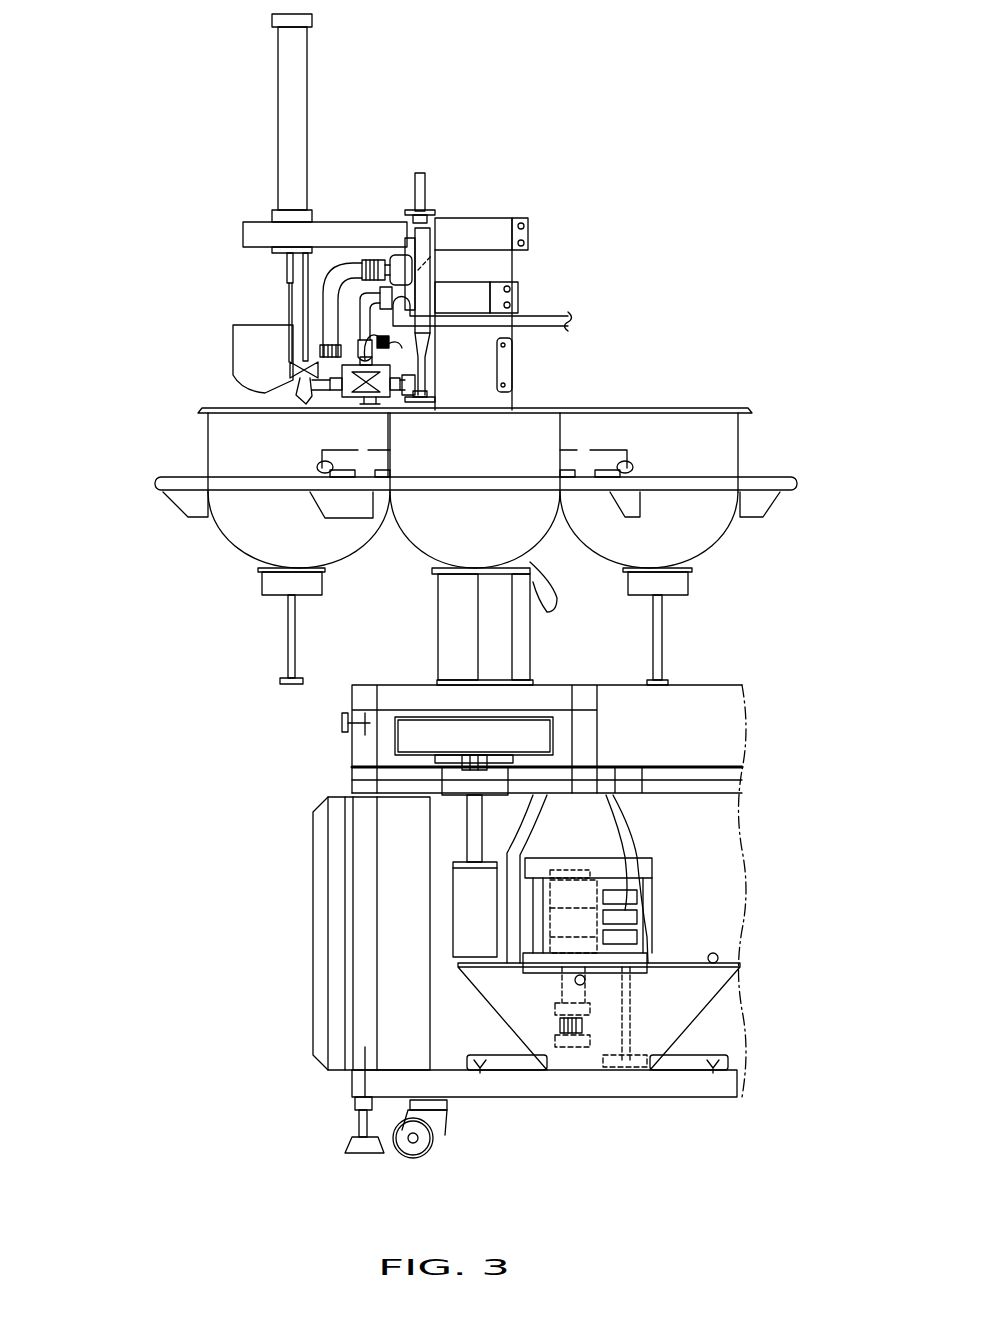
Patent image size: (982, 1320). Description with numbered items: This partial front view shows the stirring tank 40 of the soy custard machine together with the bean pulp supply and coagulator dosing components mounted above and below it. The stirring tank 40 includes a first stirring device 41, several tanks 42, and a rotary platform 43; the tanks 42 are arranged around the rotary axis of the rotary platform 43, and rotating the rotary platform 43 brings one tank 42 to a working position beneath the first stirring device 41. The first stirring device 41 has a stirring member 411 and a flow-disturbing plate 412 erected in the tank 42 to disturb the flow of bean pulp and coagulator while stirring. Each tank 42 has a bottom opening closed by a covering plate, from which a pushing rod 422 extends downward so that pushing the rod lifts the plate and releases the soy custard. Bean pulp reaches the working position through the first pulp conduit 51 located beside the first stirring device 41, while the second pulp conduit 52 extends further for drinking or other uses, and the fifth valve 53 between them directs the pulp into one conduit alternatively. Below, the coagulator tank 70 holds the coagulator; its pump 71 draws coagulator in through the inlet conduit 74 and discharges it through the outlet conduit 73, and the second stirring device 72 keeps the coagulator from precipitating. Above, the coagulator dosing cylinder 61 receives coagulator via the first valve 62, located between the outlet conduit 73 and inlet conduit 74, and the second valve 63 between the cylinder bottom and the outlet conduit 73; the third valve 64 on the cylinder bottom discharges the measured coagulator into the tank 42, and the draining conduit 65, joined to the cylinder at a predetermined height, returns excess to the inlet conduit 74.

The stirring tank 40 is at (78, 327).
The first stirring device 41 is at (132, 270).
The stirring member 411 is at (302, 296).
The flow-disturbing plate 412 is at (245, 350).
The tank 42 is at (230, 533).
The pushing rod 422 is at (657, 643).
The rotary platform 43 is at (160, 485).
The first pulp conduit 51 is at (373, 303).
The second pulp conduit 52 is at (393, 258).
The fifth valve 53 is at (540, 318).
The coagulator dosing cylinder 61 is at (428, 245).
The first valve 62 is at (355, 398).
The second valve 63 is at (372, 400).
The third valve 64 is at (405, 386).
The draining conduit 65 is at (343, 273).
The coagulator tank 70 is at (700, 993).
The pump 71 is at (578, 923).
The second stirring device 72 is at (637, 1063).
The outlet conduit 73 is at (400, 348).
The inlet conduit 74 is at (305, 398).